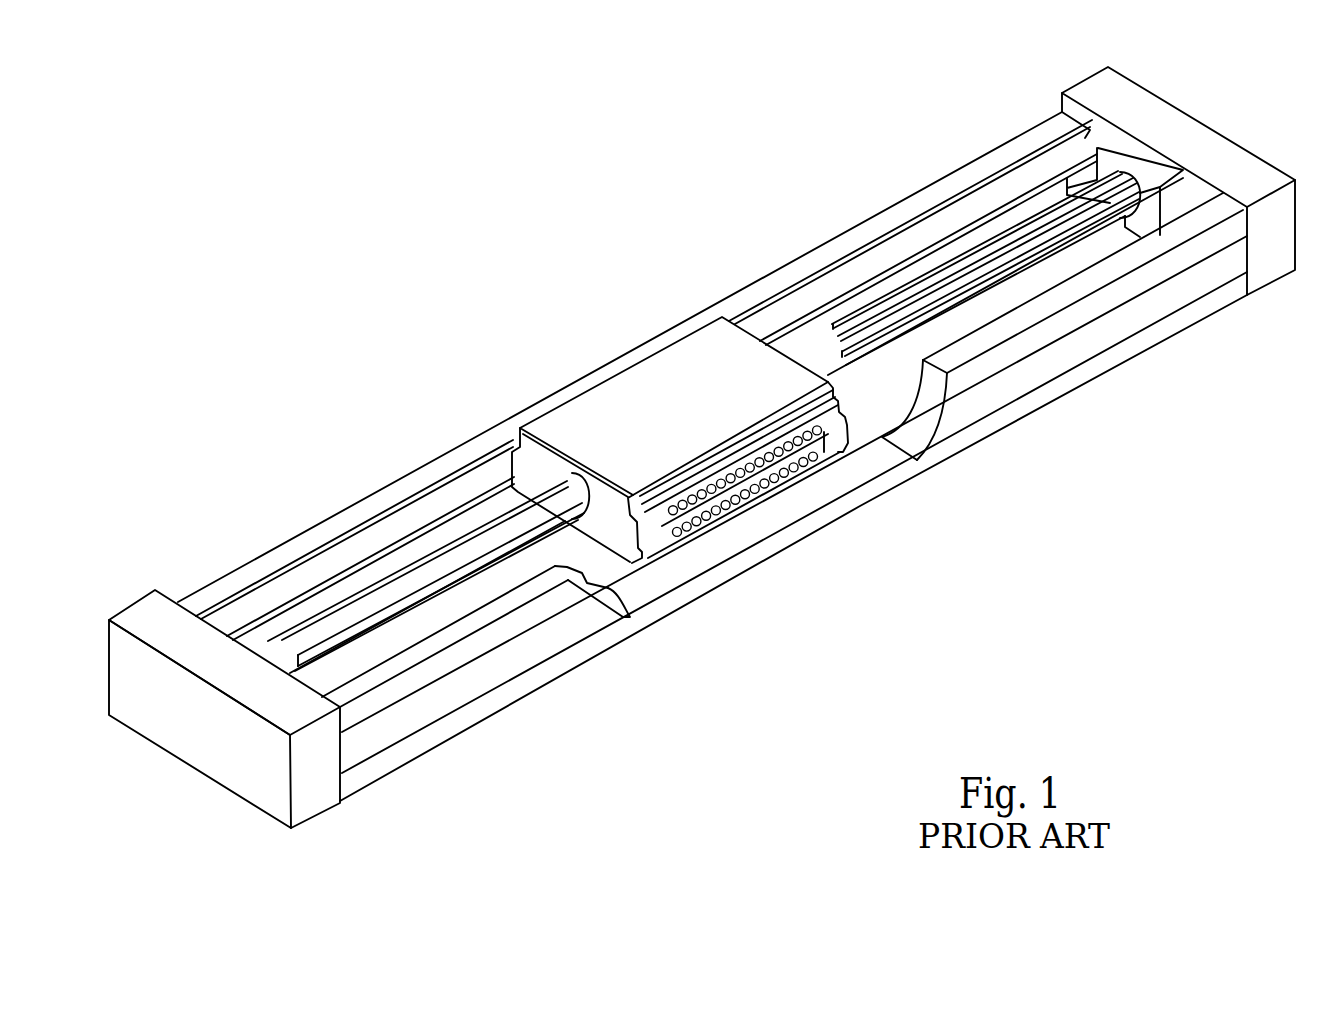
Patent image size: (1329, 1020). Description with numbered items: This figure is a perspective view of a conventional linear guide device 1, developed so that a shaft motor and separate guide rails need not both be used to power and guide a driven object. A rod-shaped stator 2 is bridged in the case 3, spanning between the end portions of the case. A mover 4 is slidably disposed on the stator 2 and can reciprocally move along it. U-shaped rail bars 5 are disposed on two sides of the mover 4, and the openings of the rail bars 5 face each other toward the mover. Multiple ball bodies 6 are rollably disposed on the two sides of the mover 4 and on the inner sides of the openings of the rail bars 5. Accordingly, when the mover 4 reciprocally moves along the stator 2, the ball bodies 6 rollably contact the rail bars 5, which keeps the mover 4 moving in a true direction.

The linear guide device 1 is at (1092, 684).
The rod-shaped stator 2 is at (483, 540).
The case 3 is at (1198, 140).
The mover 4 is at (697, 363).
The U-shaped rail bars 5 is at (825, 257).
The ball bodies 6 is at (762, 508).